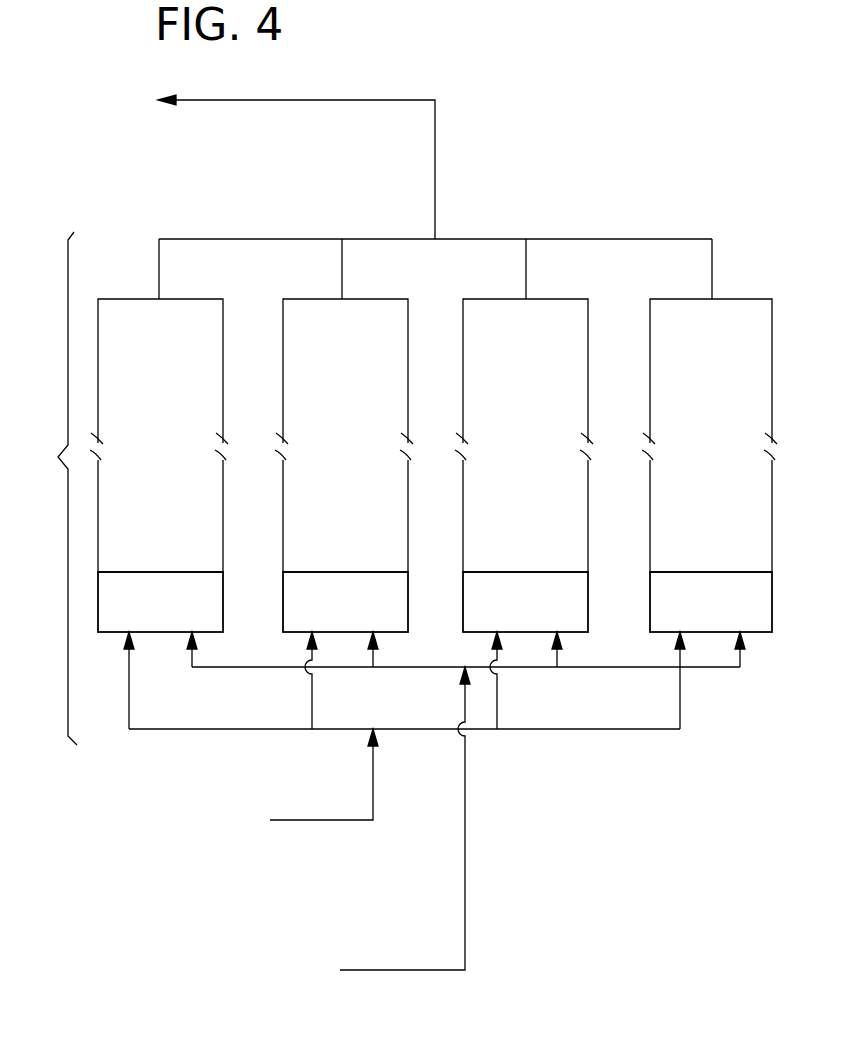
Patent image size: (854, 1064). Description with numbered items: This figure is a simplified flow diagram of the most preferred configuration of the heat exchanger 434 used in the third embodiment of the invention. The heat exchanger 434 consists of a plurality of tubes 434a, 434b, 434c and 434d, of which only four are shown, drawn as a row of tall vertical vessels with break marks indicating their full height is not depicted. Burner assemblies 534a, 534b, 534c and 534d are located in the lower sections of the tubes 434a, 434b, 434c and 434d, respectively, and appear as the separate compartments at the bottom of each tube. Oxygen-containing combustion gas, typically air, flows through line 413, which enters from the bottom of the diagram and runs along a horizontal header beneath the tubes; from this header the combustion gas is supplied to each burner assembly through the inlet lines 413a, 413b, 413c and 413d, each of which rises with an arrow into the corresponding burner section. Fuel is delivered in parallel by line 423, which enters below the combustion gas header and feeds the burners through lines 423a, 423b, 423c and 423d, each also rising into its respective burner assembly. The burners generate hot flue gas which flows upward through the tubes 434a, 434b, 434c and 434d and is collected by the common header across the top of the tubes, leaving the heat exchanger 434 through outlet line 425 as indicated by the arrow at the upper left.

The outlet line 425 is at (297, 99).
The heat exchanger 434 is at (397, 488).
The tube 434a is at (138, 468).
The tube 434b is at (368, 468).
The tube 434c is at (548, 468).
The tube 434d is at (689, 468).
The burner assembly 534a is at (138, 613).
The burner assembly 534b is at (368, 613).
The burner assembly 534c is at (548, 613).
The burner assembly 534d is at (689, 613).
The line 423 is at (330, 819).
The line 423a is at (130, 716).
The line 423b is at (313, 716).
The line 423c is at (498, 716).
The line 423d is at (681, 716).
The line 413 is at (399, 970).
The inlet line 413a is at (193, 664).
The inlet line 413b is at (374, 664).
The inlet line 413c is at (558, 664).
The inlet line 413d is at (741, 664).